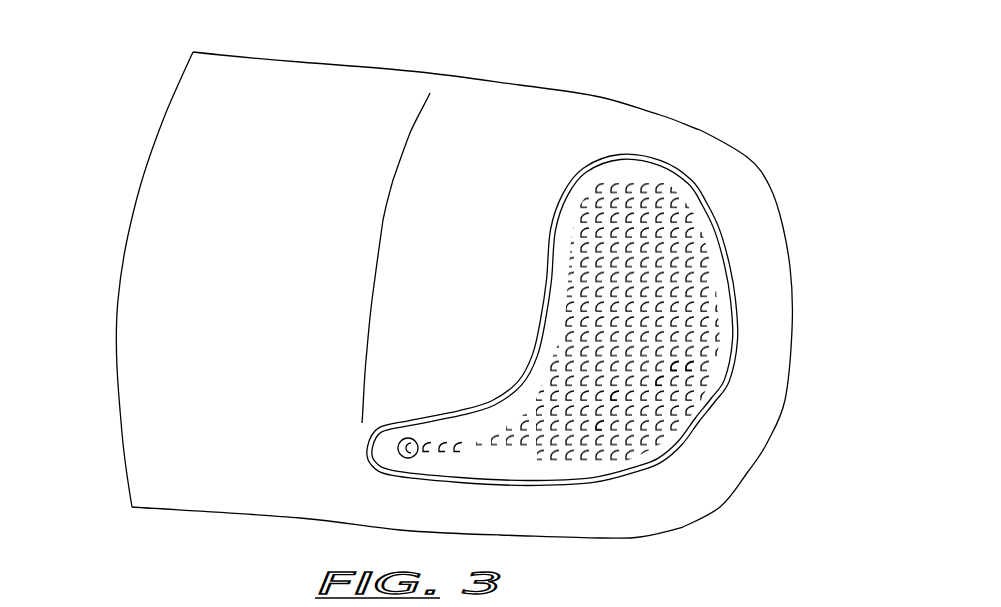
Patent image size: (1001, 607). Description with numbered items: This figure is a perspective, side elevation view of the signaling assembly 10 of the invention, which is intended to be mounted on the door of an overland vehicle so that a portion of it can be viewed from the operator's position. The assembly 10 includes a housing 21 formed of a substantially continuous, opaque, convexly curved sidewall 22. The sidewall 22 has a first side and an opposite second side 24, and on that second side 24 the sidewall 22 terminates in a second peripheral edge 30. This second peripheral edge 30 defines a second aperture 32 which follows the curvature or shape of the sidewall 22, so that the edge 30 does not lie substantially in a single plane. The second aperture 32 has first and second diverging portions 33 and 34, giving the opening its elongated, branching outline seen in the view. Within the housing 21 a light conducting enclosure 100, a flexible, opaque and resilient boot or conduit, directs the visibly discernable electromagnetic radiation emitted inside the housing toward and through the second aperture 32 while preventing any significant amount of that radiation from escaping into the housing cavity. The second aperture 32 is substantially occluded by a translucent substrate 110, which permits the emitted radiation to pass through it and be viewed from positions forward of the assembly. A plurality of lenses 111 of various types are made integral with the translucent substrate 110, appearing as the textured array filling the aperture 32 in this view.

The signaling assembly 10 is at (488, 286).
The housing 21 is at (483, 93).
The convexly curved sidewall 22 is at (280, 322).
The second side 24 is at (198, 477).
The second peripheral edge 30 is at (735, 275).
The second aperture 32 is at (559, 233).
The first diverging portion 33 is at (502, 443).
The second diverging portion 34 is at (637, 242).
The light conducting enclosure 100 is at (590, 334).
The translucent substrate 110 is at (687, 372).
The lenses 111 is at (617, 402).